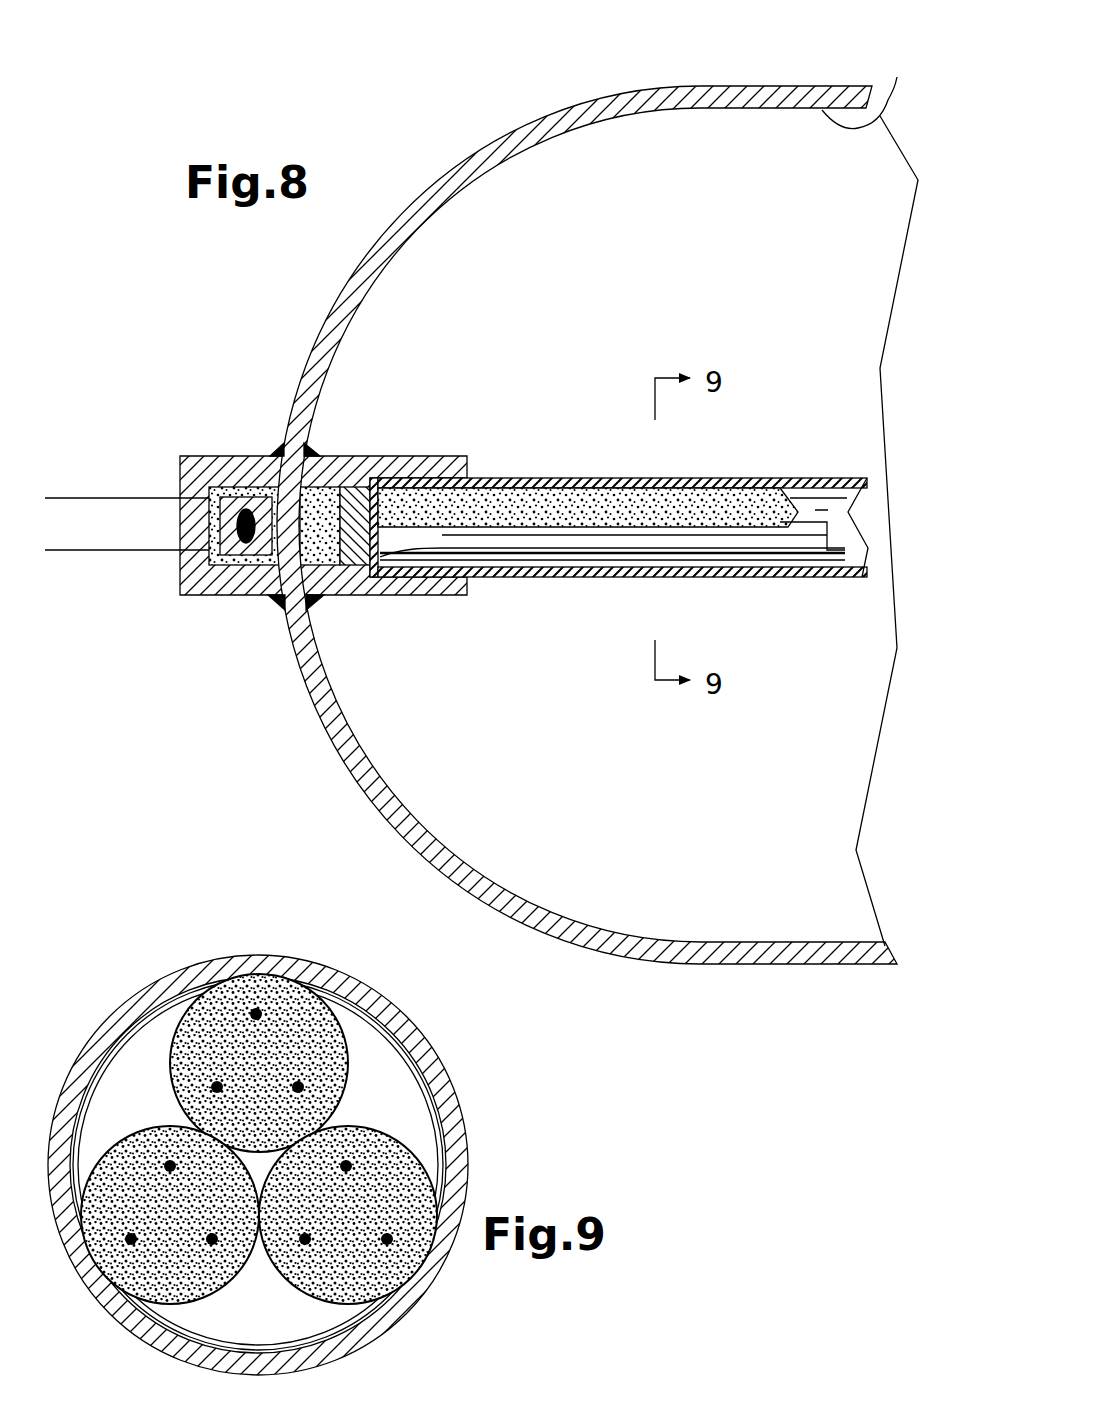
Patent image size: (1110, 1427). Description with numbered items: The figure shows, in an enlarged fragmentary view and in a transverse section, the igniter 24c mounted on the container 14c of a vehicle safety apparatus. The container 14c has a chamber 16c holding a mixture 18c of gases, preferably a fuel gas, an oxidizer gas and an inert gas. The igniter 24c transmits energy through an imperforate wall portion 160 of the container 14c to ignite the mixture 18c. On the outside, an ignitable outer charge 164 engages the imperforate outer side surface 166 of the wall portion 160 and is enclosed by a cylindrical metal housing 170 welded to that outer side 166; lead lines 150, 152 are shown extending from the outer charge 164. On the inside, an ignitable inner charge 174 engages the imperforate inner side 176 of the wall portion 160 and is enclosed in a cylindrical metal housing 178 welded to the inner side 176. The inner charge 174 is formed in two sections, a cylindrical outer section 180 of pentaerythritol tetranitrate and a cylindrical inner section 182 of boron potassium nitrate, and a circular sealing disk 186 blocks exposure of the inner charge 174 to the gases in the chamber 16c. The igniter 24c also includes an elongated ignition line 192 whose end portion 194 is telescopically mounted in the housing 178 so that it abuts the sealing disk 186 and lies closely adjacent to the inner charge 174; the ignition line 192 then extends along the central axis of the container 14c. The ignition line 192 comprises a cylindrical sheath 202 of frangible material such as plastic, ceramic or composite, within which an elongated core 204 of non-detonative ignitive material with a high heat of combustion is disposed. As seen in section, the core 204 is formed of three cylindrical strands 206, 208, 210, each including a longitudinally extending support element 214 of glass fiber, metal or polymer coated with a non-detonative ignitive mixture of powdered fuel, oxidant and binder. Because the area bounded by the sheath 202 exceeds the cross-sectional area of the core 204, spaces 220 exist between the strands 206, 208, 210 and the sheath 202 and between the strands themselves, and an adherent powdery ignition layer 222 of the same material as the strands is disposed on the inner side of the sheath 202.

In FIG. 8, the container 14c is at (791, 83).
In FIG. 8, the chamber 16c is at (869, 85).
In FIG. 8, the mixture of gases 18c is at (668, 140).
In FIG. 8, the igniter 24c is at (276, 437).
In FIG. 8, the lead wire 150 is at (120, 490).
In FIG. 8, the lead wire 152 is at (120, 560).
In FIG. 8, the imperforate wall portion 160 is at (352, 307).
In FIG. 8, the ignitable outer charge 164 is at (270, 565).
In FIG. 8, the imperforate outer side surface 166 is at (313, 707).
In FIG. 8, the cylindrical metal housing 170 is at (211, 466).
In FIG. 8, the ignitable inner charge 174 is at (330, 472).
In FIG. 8, the imperforate inner side 176 is at (358, 740).
In FIG. 8, the cylindrical metal housing 178 is at (365, 585).
In FIG. 8, the cylindrical outer section 180 is at (321, 468).
In FIG. 8, the cylindrical inner section 182 is at (356, 476).
In FIG. 8, the circular sealing disk 186 is at (500, 584).
In FIG. 8, the elongated ignition line 192 is at (788, 476).
In FIG. 9, the elongated ignition line 192 is at (146, 956).
In FIG. 8, the end portion 194 is at (499, 477).
In FIG. 8, the cylindrical sheath 202 is at (786, 580).
In FIG. 9, the cylindrical sheath 202 is at (435, 1070).
In FIG. 8, the elongated core 204 is at (728, 477).
In FIG. 9, the elongated core 204 is at (362, 1058).
In FIG. 8, the cylindrical strand 206 is at (607, 503).
In FIG. 9, the cylindrical strand 206 is at (261, 997).
In FIG. 9, the cylindrical strand 208 is at (373, 1261).
In FIG. 8, the cylindrical strand 210 is at (592, 540).
In FIG. 9, the cylindrical strand 210 is at (158, 1257).
In FIG. 9, the longitudinally extending support element 214 is at (170, 1166).
In FIG. 9, the space 220 is at (137, 1058).
In FIG. 9, the adherent powdery ignition layer 222 is at (445, 1167).